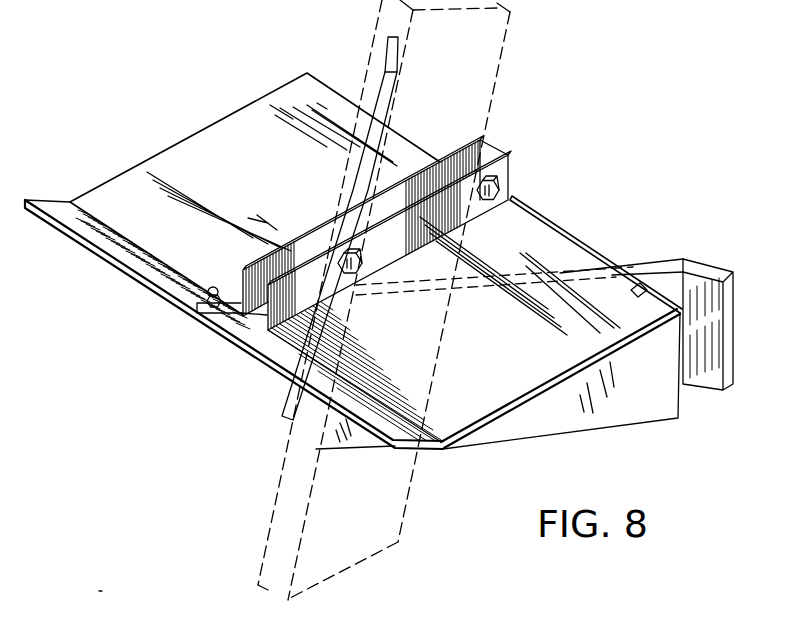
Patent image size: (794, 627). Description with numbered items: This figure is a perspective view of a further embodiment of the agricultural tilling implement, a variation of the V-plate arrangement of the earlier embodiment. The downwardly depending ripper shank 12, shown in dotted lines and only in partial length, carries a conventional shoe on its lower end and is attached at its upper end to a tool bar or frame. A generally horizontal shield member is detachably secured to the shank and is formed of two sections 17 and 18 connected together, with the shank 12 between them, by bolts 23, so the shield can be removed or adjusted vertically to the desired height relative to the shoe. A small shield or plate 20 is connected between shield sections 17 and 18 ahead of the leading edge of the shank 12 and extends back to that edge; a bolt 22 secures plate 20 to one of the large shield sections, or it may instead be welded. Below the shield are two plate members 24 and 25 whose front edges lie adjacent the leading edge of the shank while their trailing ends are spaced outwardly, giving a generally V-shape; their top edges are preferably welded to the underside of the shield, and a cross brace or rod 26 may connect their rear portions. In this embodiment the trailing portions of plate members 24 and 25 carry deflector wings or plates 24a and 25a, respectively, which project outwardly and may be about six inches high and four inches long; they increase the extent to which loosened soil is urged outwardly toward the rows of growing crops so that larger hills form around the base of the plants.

The shank 12 is at (393, 497).
The shield section 17 is at (534, 322).
The shield section 18 is at (194, 158).
The small shield or plate 20 is at (221, 341).
The bolt 22 is at (195, 292).
The bolts 23 is at (364, 266).
The plate member 24 is at (289, 389).
The deflector wing or plate 24a is at (384, 63).
The plate member 25 is at (640, 406).
The deflector wing or plate 25a is at (738, 305).
The cross brace or rod 26 is at (589, 254).